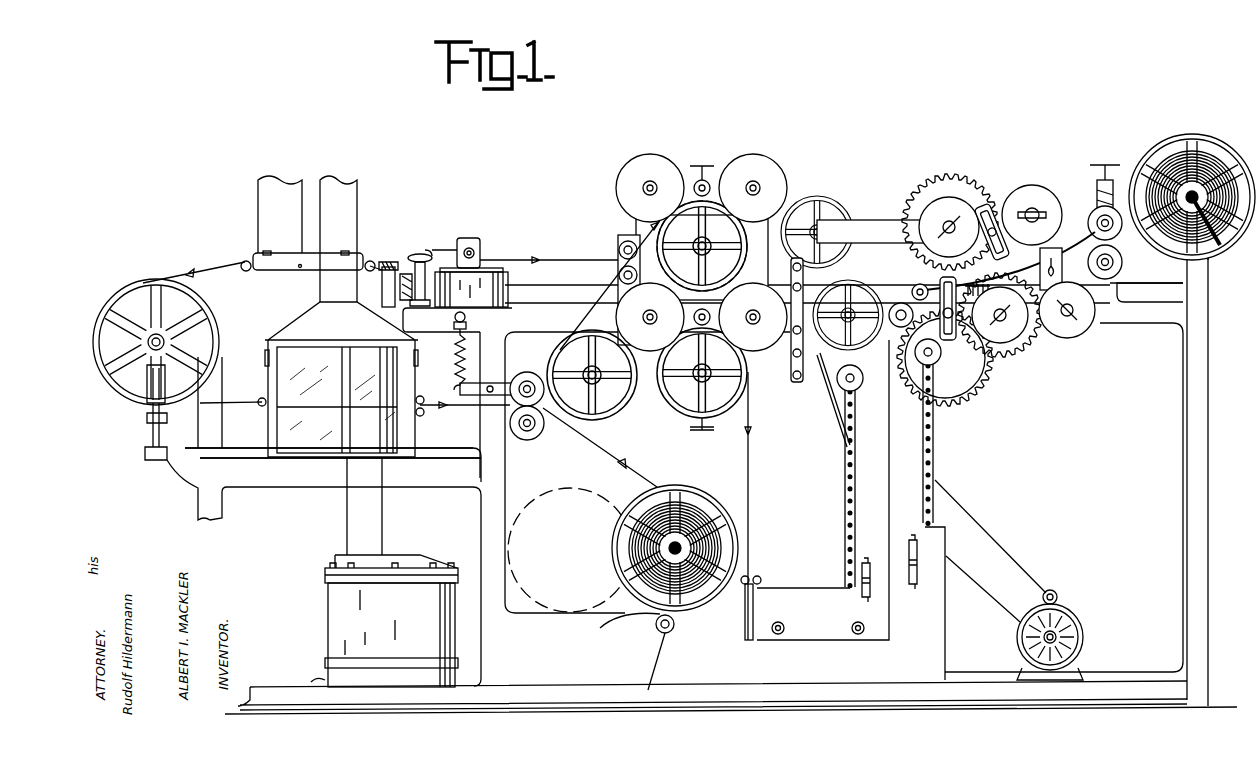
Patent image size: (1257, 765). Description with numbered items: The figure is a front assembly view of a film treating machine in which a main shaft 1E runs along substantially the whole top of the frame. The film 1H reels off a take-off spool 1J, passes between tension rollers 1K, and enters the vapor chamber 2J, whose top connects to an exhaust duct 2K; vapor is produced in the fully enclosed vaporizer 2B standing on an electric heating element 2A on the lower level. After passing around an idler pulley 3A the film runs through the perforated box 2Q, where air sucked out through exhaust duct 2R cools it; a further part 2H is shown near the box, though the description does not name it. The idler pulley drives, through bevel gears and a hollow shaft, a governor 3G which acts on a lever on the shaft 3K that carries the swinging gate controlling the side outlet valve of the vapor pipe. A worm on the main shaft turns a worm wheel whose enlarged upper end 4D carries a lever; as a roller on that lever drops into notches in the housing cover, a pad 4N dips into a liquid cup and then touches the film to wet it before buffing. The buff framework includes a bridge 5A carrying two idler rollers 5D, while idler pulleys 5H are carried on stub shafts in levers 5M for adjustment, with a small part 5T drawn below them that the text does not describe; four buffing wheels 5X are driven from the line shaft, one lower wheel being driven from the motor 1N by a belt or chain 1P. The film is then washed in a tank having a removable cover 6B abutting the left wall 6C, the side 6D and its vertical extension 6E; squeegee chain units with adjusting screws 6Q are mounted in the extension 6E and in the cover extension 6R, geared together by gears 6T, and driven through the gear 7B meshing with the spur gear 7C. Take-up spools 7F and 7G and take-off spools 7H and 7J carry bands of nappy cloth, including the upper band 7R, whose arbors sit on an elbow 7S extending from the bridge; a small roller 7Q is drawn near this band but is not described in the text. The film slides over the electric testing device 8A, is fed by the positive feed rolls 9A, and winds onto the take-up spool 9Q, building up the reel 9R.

The main shaft 1E is at (549, 286).
The film 1H is at (592, 447).
The take-off spool 1J is at (698, 491).
The tension rollers 1K is at (540, 432).
The motor 1N is at (1079, 618).
The belt or chain 1P is at (985, 534).
The electric heating element 2A is at (384, 672).
The vaporizer 2B is at (391, 625).
The post 2H is at (390, 265).
The vapor chamber 2J is at (341, 379).
The exhaust duct 2K is at (338, 239).
The box 2Q is at (308, 261).
The exhaust duct 2R is at (280, 214).
The idler pulley 3A is at (147, 296).
The governor 3G is at (146, 420).
The shaft 3K is at (244, 457).
The upper end of worm wheel shaft 4D is at (481, 256).
The pad 4N is at (421, 256).
The bridge 5A is at (714, 182).
The idler rollers 5D is at (620, 262).
The idler pulleys 5H is at (684, 418).
The levers 5M is at (726, 242).
The roller 5T is at (703, 162).
The buffing wheels 5X is at (650, 168).
The removable cover 6B is at (803, 592).
The left wall 6C is at (744, 632).
The side 6D is at (851, 510).
The vertical extension 6E is at (915, 431).
The adjusting screws 6Q is at (858, 594).
The vertical extension of cover 6R is at (847, 470).
The gear 6T is at (958, 378).
The gear 7B is at (950, 400).
The spur gear 7C is at (961, 180).
The take-up spool 7F is at (1004, 345).
The take-up spool 7G is at (935, 213).
The take-off spool 7H is at (1084, 330).
The take-off spool 7J is at (1032, 186).
The roller 7Q is at (918, 285).
The band of nappy cloth 7R is at (1090, 240).
The elbow 7S is at (883, 231).
The electric device 8A is at (1056, 267).
The positive feed rolls 9A is at (1100, 172).
The take-up spool 9Q is at (1197, 140).
The reel 9R is at (1226, 248).